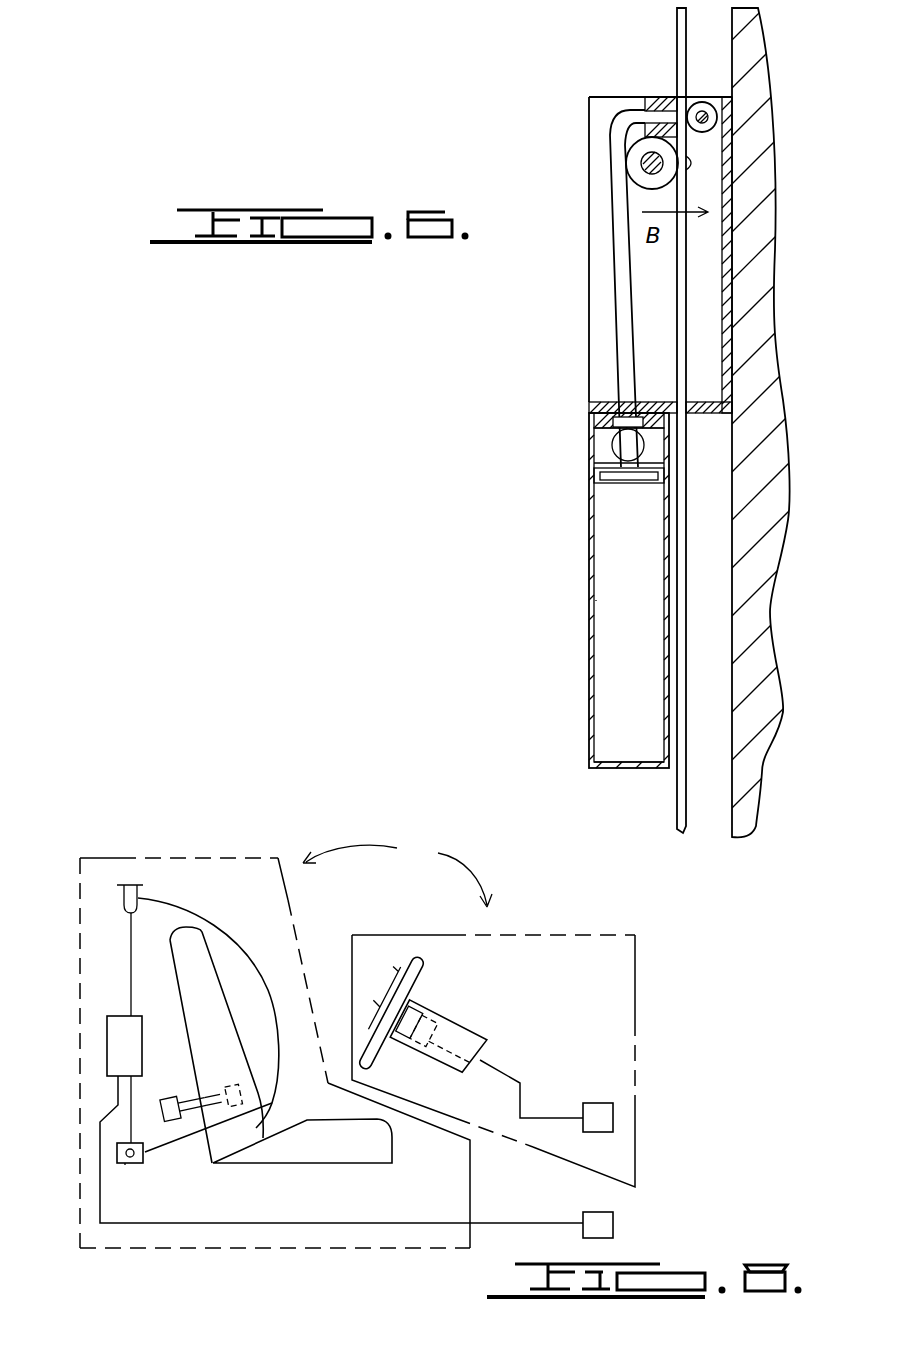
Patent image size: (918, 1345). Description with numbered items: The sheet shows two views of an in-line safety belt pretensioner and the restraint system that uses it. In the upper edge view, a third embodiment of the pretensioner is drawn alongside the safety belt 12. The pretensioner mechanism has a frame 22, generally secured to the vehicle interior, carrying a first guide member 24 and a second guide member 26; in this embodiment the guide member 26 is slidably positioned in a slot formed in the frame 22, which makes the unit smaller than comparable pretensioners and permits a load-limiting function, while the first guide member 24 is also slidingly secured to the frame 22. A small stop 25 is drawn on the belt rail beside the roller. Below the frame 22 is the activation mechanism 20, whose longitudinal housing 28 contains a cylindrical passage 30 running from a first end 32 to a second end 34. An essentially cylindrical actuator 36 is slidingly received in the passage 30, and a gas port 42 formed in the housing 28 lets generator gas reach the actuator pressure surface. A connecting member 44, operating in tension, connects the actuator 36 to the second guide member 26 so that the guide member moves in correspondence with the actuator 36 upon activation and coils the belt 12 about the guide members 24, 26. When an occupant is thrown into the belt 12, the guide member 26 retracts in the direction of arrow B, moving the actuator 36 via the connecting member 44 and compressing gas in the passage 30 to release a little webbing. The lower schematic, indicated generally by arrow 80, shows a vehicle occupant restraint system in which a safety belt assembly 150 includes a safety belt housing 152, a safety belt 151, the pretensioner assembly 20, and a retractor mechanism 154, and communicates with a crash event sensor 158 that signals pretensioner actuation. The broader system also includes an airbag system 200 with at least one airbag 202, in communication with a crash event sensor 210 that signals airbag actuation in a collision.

In FIG. 6, the safety belt 12 is at (677, 50).
In FIG. 6, the frame 22 is at (603, 383).
In FIG. 6, the first guide member 24 is at (634, 160).
In FIG. 6, the rail stop 25 is at (692, 163).
In FIG. 6, the second guide member 26 is at (712, 104).
In FIG. 6, the housing 28 is at (589, 693).
In FIG. 6, the cylindrical passage 30 is at (623, 618).
In FIG. 6, the first end 32 is at (630, 513).
In FIG. 6, the second end 34 is at (627, 740).
In FIG. 6, the actuator 36 is at (627, 487).
In FIG. 6, the gas port 42 is at (613, 440).
In FIG. 6, the connecting member 44 is at (621, 271).
In FIG. 8, the activation mechanism 20 is at (123, 1057).
In FIG. 8, the vehicle seat system 80 is at (397, 872).
In FIG. 8, the safety belt assembly 150 is at (120, 858).
In FIG. 8, the safety belt 151 is at (242, 953).
In FIG. 8, the safety belt housing 152 is at (145, 1158).
In FIG. 8, the retractor mechanism 154 is at (125, 1165).
In FIG. 8, the crash event sensor 158 is at (613, 1225).
In FIG. 8, the airbag system 200 is at (637, 992).
In FIG. 8, the airbag 202 is at (435, 1023).
In FIG. 8, the crash event sensor 210 is at (613, 1118).